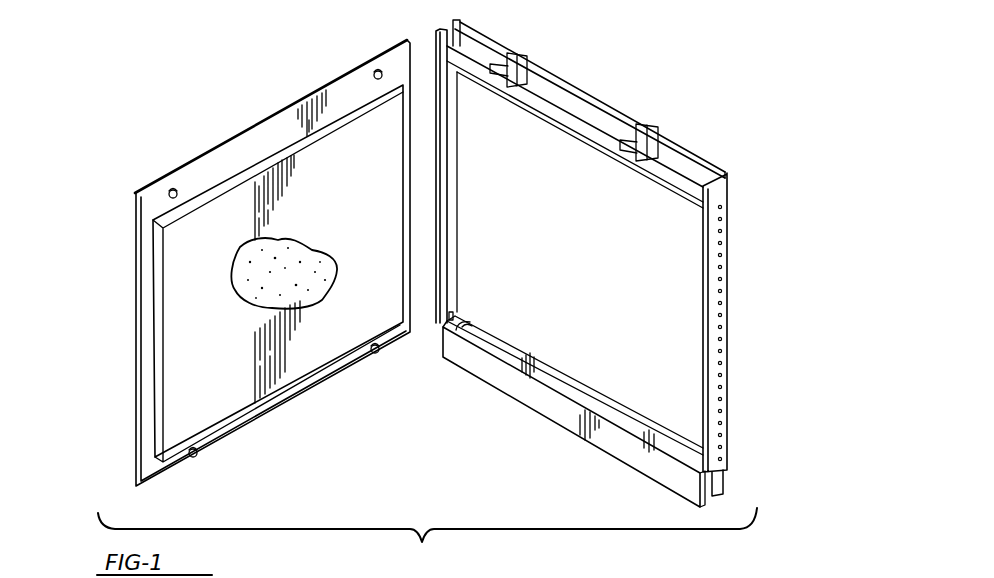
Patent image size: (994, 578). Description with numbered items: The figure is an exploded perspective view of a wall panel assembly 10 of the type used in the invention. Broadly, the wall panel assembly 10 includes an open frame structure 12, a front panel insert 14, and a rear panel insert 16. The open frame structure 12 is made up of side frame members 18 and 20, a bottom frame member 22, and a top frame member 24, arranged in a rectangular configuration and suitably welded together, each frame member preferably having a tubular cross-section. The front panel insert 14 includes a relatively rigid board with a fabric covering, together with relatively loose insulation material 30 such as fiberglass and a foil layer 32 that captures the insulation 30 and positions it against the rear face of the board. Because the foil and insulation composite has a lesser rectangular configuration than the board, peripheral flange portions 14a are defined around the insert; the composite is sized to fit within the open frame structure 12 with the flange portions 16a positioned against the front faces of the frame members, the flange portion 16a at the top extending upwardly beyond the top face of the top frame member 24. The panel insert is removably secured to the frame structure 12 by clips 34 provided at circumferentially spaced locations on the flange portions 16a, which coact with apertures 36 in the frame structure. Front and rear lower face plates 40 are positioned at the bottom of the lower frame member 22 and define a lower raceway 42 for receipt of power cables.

The wall panel assembly 10 is at (460, 266).
The open frame structure 12 is at (653, 266).
The front panel insert 14 is at (596, 125).
The peripheral flange portions 14a is at (628, 120).
The rear panel insert 16 is at (329, 268).
The flange portions 16a is at (258, 148).
The side frame member 18 is at (701, 268).
The side frame member 20 is at (450, 209).
The bottom frame member 22 is at (582, 397).
The top frame member 24 is at (610, 150).
The insulation material 30 is at (321, 262).
The foil layer 32 is at (300, 375).
The clips 34 is at (172, 198).
The apertures 36 is at (449, 330).
The lower face plates 40 is at (634, 409).
The lower raceway 42 is at (710, 505).